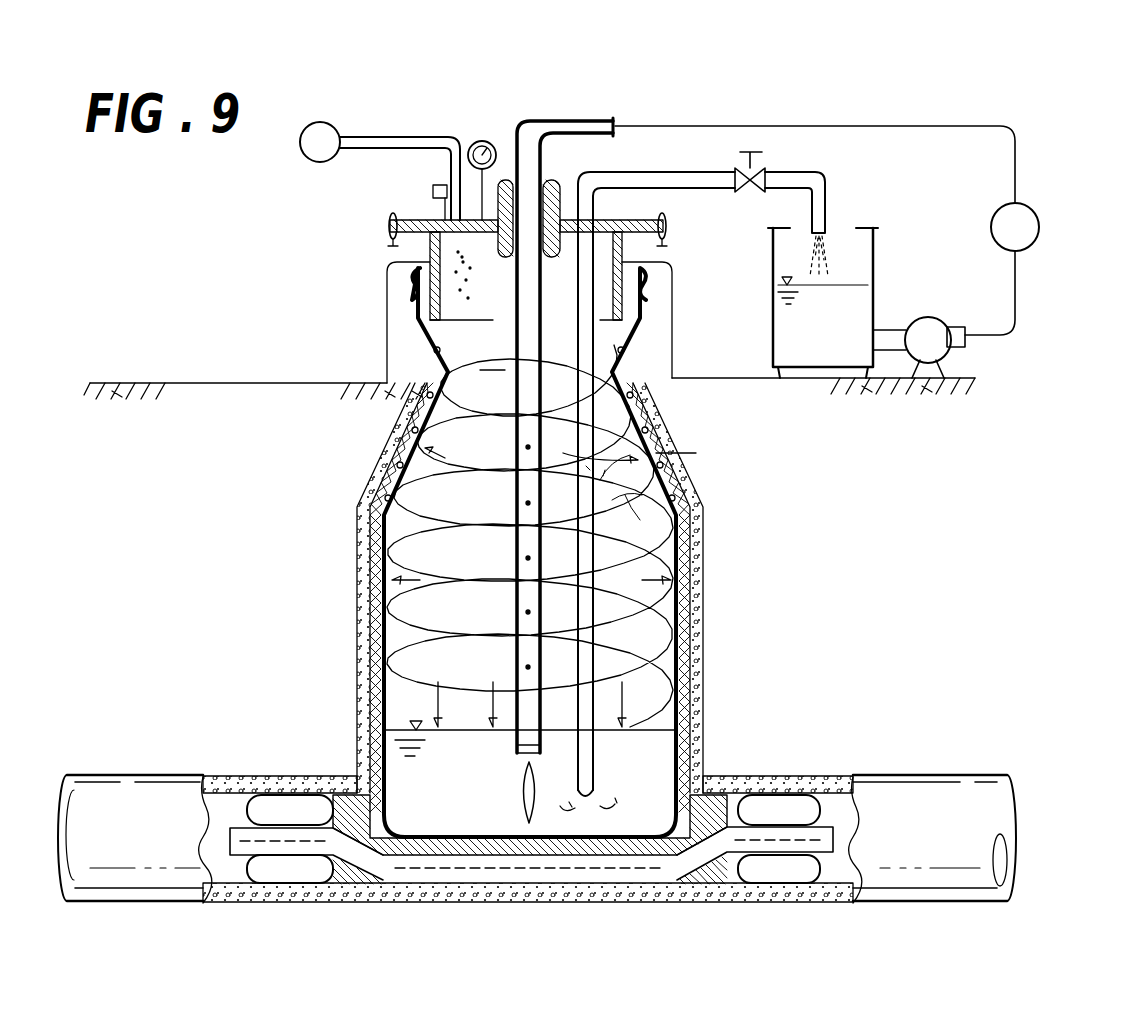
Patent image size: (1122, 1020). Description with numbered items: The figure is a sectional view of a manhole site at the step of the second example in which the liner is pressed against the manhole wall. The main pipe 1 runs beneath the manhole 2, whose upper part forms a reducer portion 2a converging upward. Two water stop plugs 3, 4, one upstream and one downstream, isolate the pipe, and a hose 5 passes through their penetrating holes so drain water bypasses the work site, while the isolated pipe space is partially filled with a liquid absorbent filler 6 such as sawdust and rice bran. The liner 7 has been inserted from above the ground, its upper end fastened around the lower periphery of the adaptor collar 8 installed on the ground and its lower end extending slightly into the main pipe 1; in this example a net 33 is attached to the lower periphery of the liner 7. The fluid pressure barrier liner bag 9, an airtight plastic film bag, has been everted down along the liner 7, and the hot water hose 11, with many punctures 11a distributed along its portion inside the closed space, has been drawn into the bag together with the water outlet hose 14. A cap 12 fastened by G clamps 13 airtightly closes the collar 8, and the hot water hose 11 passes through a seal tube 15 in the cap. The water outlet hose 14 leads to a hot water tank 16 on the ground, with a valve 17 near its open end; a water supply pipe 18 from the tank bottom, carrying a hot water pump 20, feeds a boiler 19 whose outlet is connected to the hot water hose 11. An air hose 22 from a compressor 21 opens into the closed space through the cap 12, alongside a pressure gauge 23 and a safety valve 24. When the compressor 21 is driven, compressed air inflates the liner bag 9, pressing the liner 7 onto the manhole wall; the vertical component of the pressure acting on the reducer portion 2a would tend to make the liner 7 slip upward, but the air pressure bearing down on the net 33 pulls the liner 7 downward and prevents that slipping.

The main pipe 1 is at (903, 800).
The manhole 2 is at (705, 672).
The reducer portion 2a is at (697, 486).
The water stop plug 3 is at (242, 798).
The water stop plug 4 is at (827, 803).
The hose 5 is at (343, 880).
The liquid absorbent filler 6 is at (723, 800).
The liner 7 is at (383, 627).
The adaptor collar 8 is at (623, 257).
The fluid pressure barrier liner bag 9 is at (440, 838).
The hot water hose 11 is at (520, 399).
The punctures 11a is at (522, 508).
The cap 12 is at (423, 217).
The G clamps 13 is at (390, 232).
The water outlet hose 14 is at (643, 178).
The seal tube 15 is at (543, 177).
The hot water tank 16 is at (772, 338).
The valve 17 is at (757, 152).
The water supply pipe 18 is at (893, 353).
The boiler 19 is at (1031, 251).
The hot water pump 20 is at (928, 325).
The compressor 21 is at (328, 123).
The air hose 22 is at (448, 136).
The pressure gauge 23 is at (487, 141).
The safety valve 24 is at (440, 185).
The net 33 is at (433, 830).